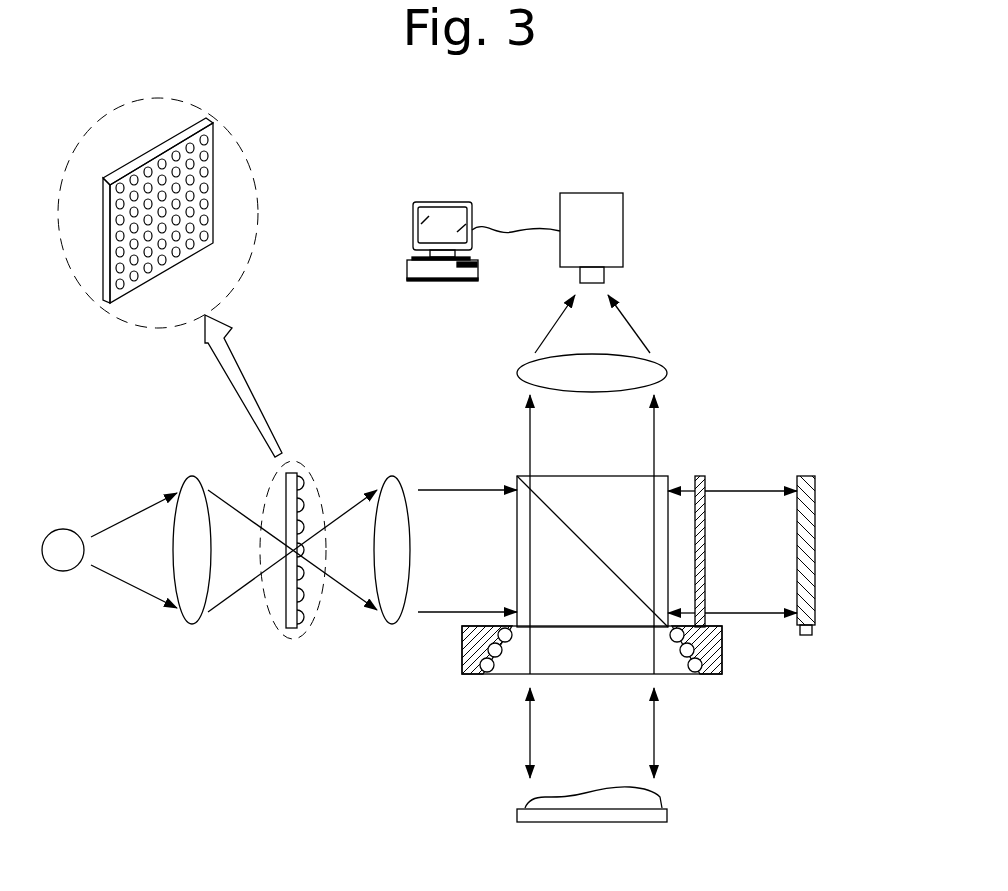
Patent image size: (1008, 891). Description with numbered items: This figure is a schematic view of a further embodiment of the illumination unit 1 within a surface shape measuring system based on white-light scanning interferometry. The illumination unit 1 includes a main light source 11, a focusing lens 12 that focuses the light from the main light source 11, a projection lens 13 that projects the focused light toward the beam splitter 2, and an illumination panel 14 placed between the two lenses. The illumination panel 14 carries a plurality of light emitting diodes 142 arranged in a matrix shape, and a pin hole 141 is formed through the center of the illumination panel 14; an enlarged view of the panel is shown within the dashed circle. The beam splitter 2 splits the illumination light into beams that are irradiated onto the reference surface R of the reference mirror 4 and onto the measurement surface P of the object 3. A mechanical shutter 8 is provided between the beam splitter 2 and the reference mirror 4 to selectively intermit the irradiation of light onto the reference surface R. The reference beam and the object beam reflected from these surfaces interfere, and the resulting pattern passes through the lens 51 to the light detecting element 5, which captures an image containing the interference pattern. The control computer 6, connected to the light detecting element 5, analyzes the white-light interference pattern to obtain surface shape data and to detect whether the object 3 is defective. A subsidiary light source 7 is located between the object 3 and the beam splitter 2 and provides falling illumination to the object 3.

The illumination unit 1 is at (226, 607).
The main light source 11 is at (72, 572).
The focusing lens 12 is at (192, 626).
The projection lens 13 is at (365, 584).
The illumination panel 14 is at (230, 385).
The pin hole 141 is at (166, 213).
The light emitting diodes 142 is at (305, 480).
The beam splitter 2 is at (662, 476).
The object 3 is at (524, 796).
The reference mirror 4 is at (818, 508).
The reference surface R is at (796, 476).
The light detecting element 5 is at (623, 238).
The imaging lens 51 is at (667, 370).
The control computer 6 is at (433, 281).
The subsidiary light source 7 is at (462, 688).
The mechanical shutter 8 is at (705, 477).
The measurement surface P is at (650, 797).